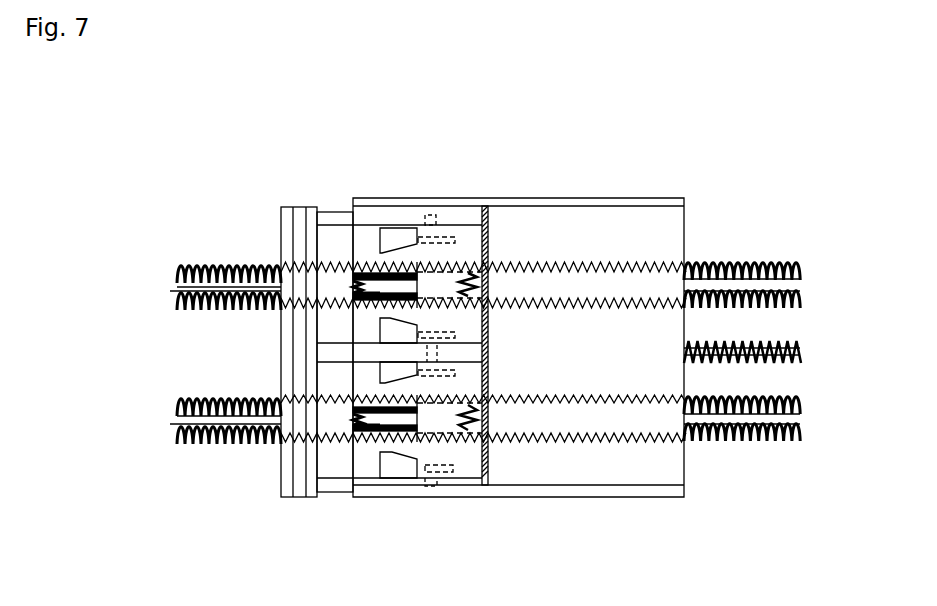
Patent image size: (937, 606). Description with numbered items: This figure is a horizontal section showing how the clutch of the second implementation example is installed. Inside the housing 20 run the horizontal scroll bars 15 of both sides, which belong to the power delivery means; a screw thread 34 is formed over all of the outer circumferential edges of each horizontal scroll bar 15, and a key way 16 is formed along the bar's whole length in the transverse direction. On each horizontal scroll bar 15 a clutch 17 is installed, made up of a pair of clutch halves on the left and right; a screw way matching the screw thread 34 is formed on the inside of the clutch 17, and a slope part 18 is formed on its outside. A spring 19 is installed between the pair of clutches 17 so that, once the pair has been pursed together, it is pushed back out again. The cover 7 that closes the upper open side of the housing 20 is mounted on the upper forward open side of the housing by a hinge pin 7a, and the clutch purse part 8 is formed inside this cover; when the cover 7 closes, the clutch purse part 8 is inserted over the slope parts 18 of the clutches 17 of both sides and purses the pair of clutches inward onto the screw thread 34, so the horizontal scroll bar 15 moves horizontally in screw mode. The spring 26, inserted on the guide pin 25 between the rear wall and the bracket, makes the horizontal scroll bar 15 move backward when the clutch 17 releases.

The cover 7 is at (488, 318).
The hinge pin 7a is at (440, 222).
The clutch purse part 8 is at (393, 468).
The horizontal scroll bar 15 is at (177, 428).
The key way 16 is at (222, 288).
The clutch 17 is at (372, 238).
The slope part 18 is at (411, 243).
The spring 19 is at (478, 425).
The housing 20 is at (580, 200).
The guide pin 25 is at (740, 345).
The spring 26 is at (800, 346).
The screw thread 34 is at (228, 445).